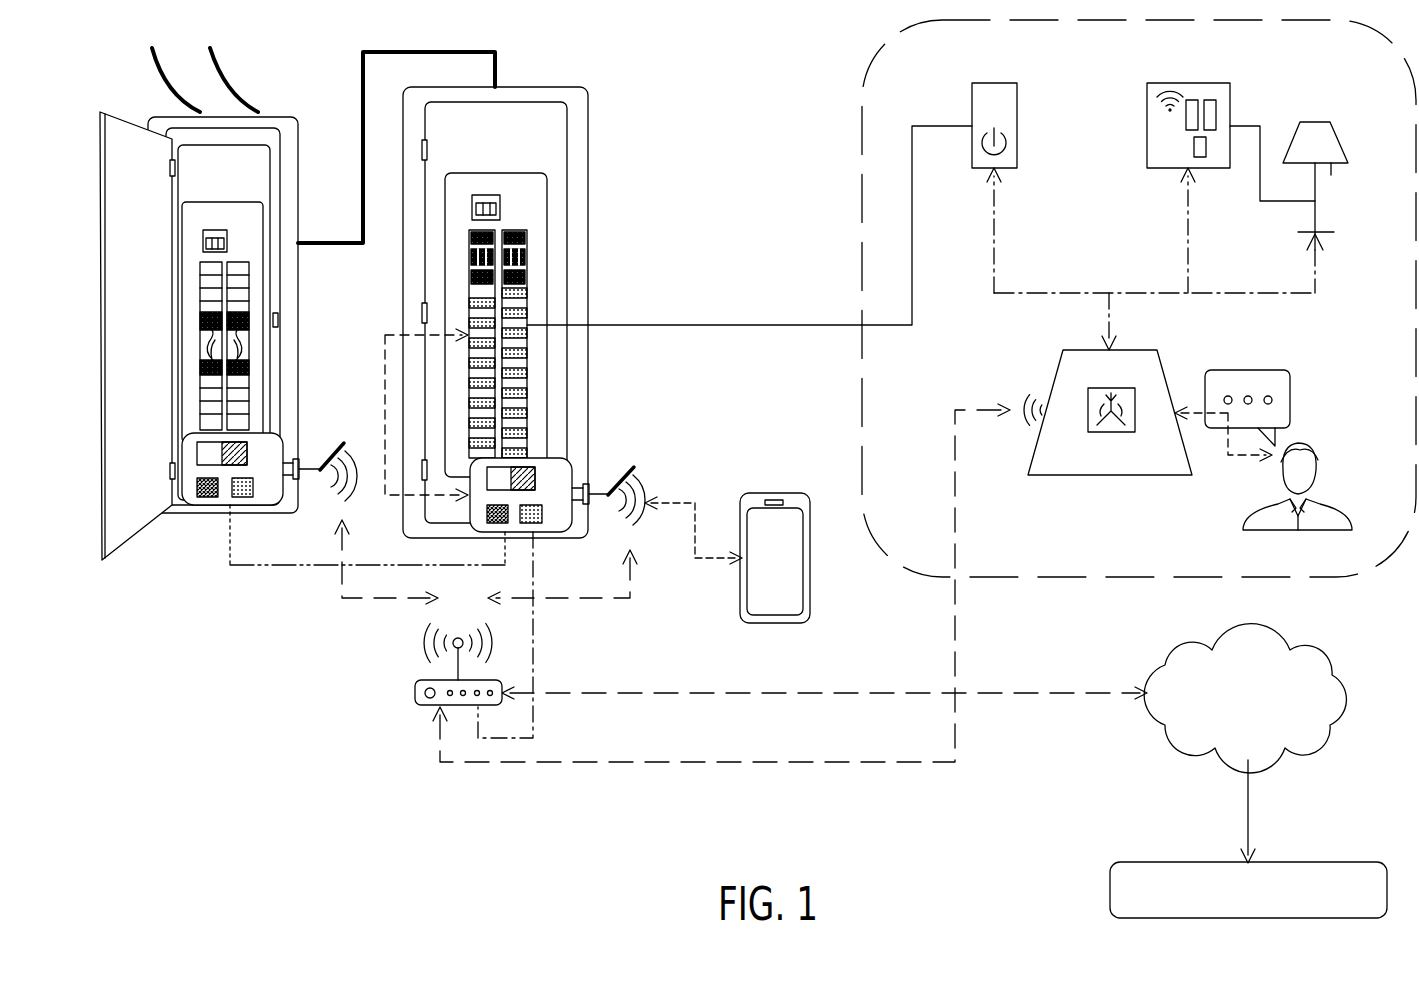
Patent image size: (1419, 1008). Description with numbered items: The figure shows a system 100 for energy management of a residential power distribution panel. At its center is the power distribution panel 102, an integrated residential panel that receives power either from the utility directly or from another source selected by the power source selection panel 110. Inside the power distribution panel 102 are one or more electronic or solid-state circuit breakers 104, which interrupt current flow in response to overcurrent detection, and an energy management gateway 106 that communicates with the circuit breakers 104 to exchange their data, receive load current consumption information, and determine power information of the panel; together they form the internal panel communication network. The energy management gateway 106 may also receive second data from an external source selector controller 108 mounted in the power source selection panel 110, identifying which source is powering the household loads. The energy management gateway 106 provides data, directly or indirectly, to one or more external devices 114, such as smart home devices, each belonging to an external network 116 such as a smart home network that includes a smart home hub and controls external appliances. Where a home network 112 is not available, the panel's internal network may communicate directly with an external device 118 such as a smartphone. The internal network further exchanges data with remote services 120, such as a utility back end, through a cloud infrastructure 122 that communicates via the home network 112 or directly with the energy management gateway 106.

The system 100 is at (519, 67).
The power distribution panel 102 is at (545, 87).
The circuit breakers 104 is at (468, 334).
The energy management gateway 106 is at (560, 473).
The source selector controller 108 is at (202, 498).
The power source selection panel 110 is at (277, 115).
The home network 112 is at (415, 692).
The external devices 114 is at (993, 83).
The external network 116 is at (862, 128).
The external device 118 is at (773, 492).
The remote services 120 is at (1325, 862).
The cloud infrastructure 122 is at (1232, 707).